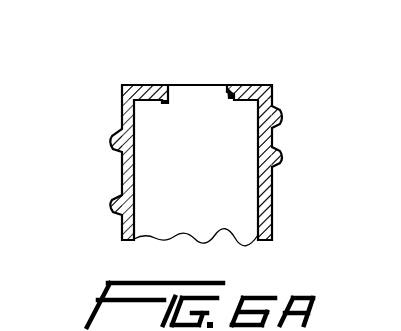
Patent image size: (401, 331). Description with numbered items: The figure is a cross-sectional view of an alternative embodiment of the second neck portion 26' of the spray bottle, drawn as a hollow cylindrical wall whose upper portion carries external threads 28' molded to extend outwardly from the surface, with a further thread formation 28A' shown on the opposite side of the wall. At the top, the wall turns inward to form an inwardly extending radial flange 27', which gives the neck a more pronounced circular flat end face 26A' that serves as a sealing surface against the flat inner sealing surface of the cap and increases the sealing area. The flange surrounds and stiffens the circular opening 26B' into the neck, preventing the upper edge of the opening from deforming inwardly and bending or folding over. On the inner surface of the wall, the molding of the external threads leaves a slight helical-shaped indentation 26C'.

The second neck portion 26' is at (156, 156).
The circular flat end face 26A' is at (98, 58).
The circular opening 26B' is at (281, 73).
The helical-shaped indentation 26C' is at (300, 169).
The inwardly extending radial flange 27' is at (201, 73).
The external threads 28' is at (71, 193).
The right locking bump 28A' is at (323, 136).